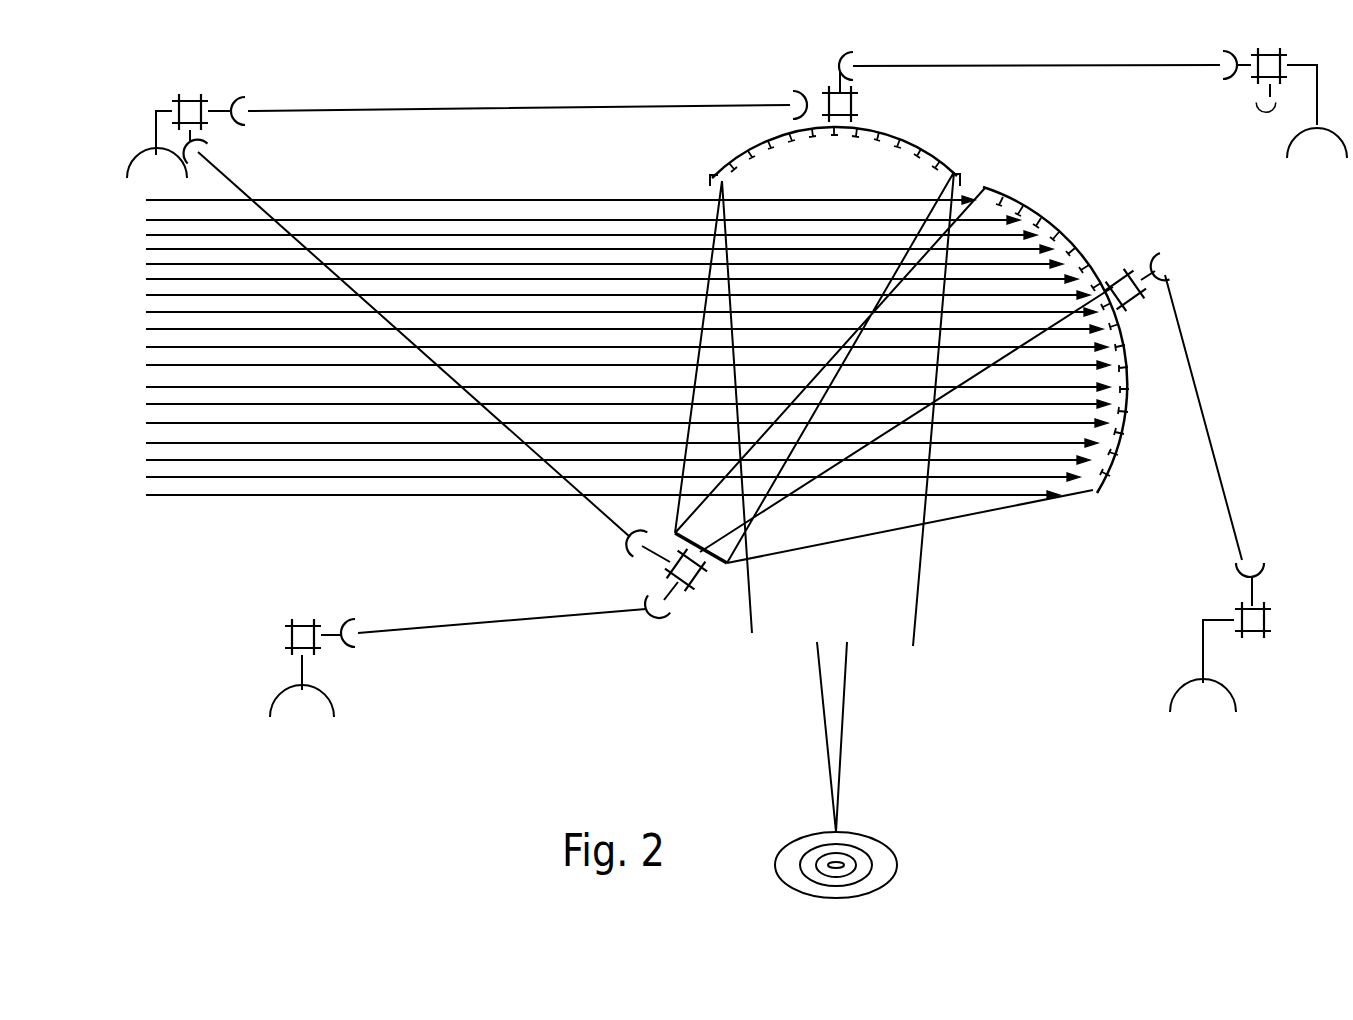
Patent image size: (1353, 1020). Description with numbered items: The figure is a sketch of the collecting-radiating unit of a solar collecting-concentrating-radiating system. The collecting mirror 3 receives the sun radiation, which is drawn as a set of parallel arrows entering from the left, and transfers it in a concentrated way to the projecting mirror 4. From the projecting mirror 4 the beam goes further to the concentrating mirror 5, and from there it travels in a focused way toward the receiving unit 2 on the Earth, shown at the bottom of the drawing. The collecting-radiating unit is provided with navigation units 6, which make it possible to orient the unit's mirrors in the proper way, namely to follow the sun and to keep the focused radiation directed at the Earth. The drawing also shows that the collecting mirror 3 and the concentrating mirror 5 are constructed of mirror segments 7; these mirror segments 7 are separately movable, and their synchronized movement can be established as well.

The radiation source 2 is at (858, 816).
The collecting mirror 3 is at (1122, 450).
The projecting mirror 4 is at (719, 572).
The concentrating mirror 5 is at (927, 136).
The navigation unit 6 is at (815, 74).
The mirror segments 7 is at (823, 132).